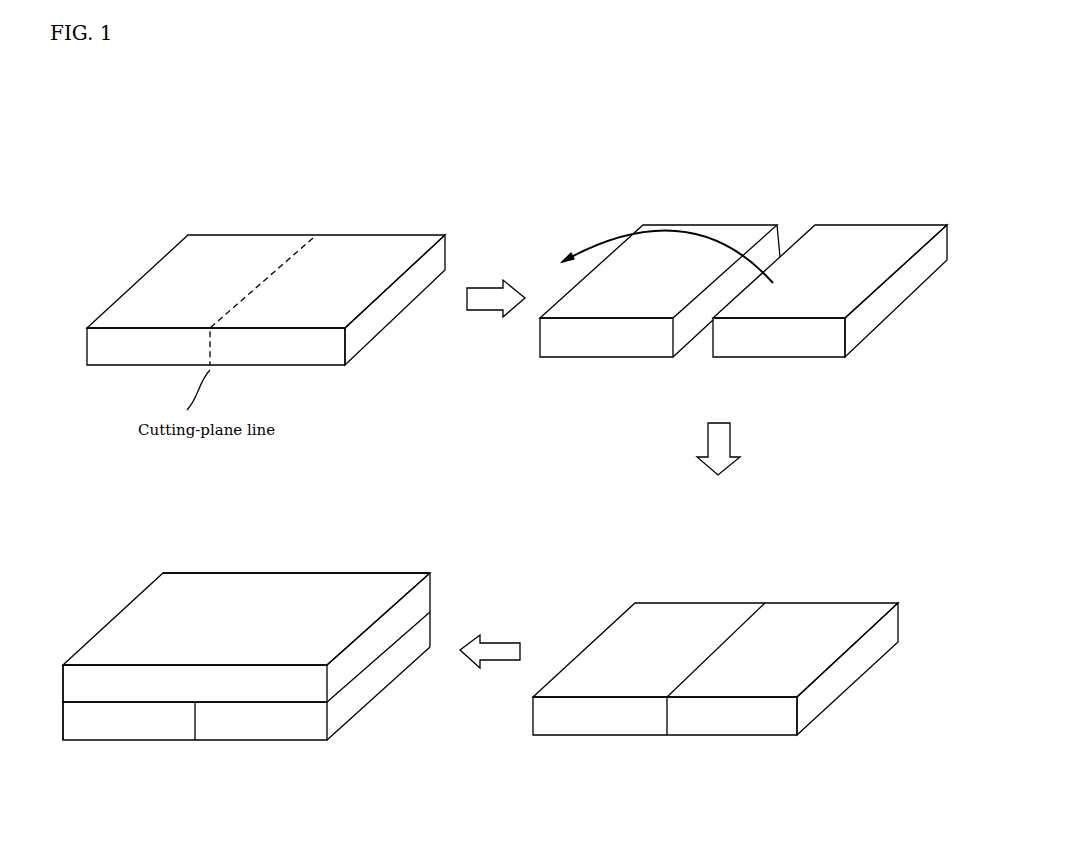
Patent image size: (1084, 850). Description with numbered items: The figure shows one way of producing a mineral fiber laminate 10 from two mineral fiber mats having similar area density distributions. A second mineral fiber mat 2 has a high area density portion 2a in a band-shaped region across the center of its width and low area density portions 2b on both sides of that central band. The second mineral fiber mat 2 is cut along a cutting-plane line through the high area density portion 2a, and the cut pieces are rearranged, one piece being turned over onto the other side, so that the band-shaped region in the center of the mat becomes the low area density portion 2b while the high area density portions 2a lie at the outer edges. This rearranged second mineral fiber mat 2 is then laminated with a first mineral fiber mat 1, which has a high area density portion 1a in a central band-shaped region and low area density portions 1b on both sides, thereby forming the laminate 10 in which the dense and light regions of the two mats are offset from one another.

The first mineral fiber mat 1 is at (372, 642).
The high area density portion of first mineral fiber mat 1a is at (280, 590).
The low area density portion of first mineral fiber mat 1b is at (192, 590).
The second mineral fiber mat 2 is at (133, 252).
The high area density portion of second mineral fiber mat 2a is at (312, 250).
The low area density portion of second mineral fiber mat 2b is at (198, 253).
The mineral fiber laminate 10 is at (347, 537).